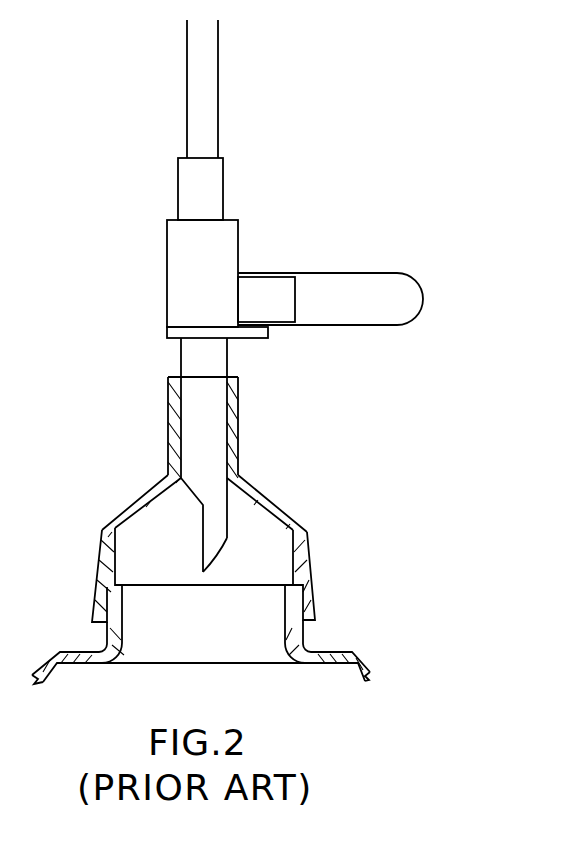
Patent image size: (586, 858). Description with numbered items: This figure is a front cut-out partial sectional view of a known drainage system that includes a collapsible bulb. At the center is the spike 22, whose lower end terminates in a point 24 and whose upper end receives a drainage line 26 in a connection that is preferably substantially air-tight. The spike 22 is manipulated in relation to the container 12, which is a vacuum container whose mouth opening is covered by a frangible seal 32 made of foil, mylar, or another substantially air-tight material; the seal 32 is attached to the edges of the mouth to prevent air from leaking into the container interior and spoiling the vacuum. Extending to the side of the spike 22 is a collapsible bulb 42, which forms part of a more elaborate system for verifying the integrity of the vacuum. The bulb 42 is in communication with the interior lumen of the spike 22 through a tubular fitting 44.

The container 12 is at (352, 652).
The spike 22 is at (181, 357).
The point 24 is at (200, 570).
The drainage line 26 is at (218, 42).
The frangible seal 32 is at (140, 575).
The collapsible bulb 42 is at (368, 273).
The tubular fitting 44 is at (295, 312).